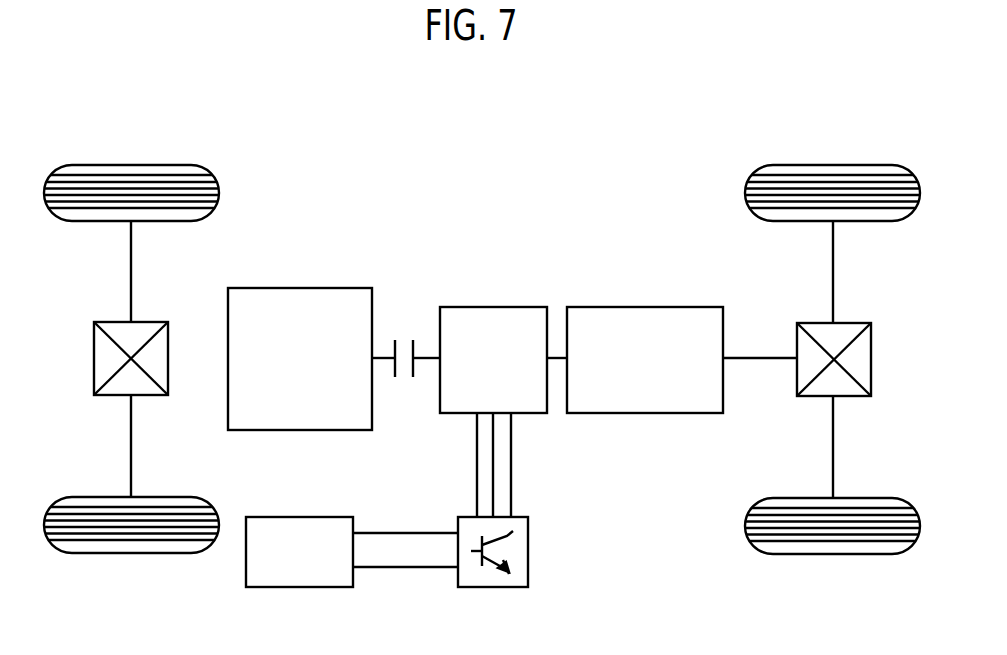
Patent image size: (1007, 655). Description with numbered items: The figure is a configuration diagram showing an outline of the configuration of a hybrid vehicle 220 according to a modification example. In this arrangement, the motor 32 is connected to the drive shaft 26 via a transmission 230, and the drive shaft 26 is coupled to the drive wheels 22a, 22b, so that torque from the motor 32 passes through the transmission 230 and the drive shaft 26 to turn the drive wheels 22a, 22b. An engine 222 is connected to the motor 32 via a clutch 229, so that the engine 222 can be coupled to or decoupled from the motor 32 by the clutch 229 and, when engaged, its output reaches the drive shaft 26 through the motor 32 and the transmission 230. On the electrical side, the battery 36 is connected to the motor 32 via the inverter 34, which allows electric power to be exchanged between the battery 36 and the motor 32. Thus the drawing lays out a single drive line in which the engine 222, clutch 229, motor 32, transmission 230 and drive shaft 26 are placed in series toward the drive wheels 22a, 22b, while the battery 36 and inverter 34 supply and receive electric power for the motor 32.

The hybrid vehicle 220 is at (596, 163).
The engine 222 is at (300, 287).
The clutch 229 is at (404, 338).
The motor 32 is at (492, 304).
The transmission 230 is at (644, 304).
The drive shaft 26 is at (758, 356).
The drive wheel 22a is at (832, 162).
The drive wheel 22b is at (832, 556).
The battery 36 is at (300, 515).
The inverter 34 is at (532, 551).